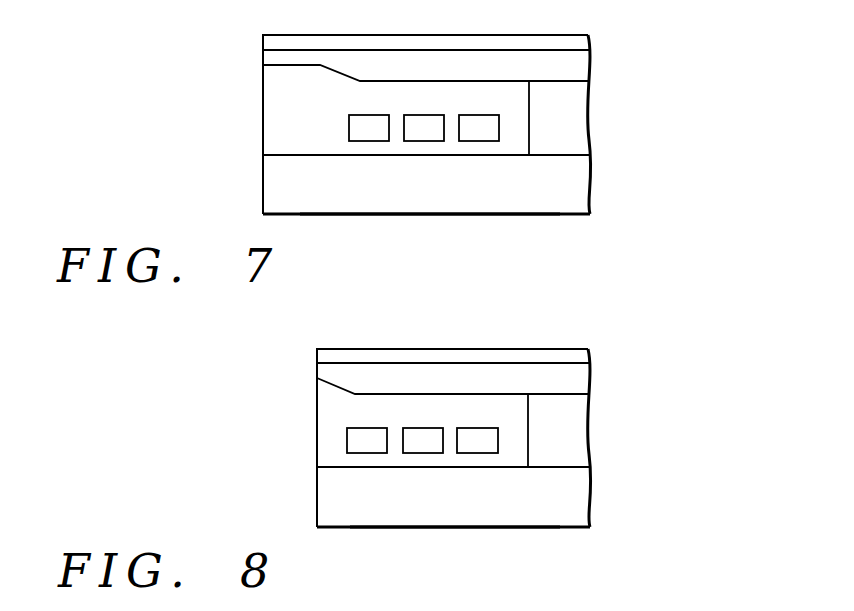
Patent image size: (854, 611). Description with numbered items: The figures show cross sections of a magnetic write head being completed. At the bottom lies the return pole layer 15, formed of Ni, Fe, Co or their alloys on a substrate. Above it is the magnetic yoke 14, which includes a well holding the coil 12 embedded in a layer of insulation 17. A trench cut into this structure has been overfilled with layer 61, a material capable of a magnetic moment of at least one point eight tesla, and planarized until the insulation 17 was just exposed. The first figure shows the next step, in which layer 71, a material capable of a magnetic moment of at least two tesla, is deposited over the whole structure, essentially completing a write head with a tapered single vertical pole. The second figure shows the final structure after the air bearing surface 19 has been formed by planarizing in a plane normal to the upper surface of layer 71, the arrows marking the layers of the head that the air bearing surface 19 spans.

In FIG. 7, the coil 12 is at (368, 131).
In FIG. 8, the coil 12 is at (366, 444).
In FIG. 7, the magnetic yoke 14 is at (553, 118).
In FIG. 8, the magnetic yoke 14 is at (553, 433).
In FIG. 7, the return pole layer 15 is at (553, 182).
In FIG. 8, the return pole layer 15 is at (553, 497).
In FIG. 7, the layer of insulation 17 is at (282, 124).
In FIG. 8, the layer of insulation 17 is at (513, 458).
In FIG. 8, the air bearing surface 19 is at (302, 370).
In FIG. 7, the layer of high moment material 61 is at (553, 63).
In FIG. 8, the layer of high moment material 61 is at (553, 378).
In FIG. 7, the layer of high moment material 71 is at (575, 38).
In FIG. 8, the layer of high moment material 71 is at (575, 353).